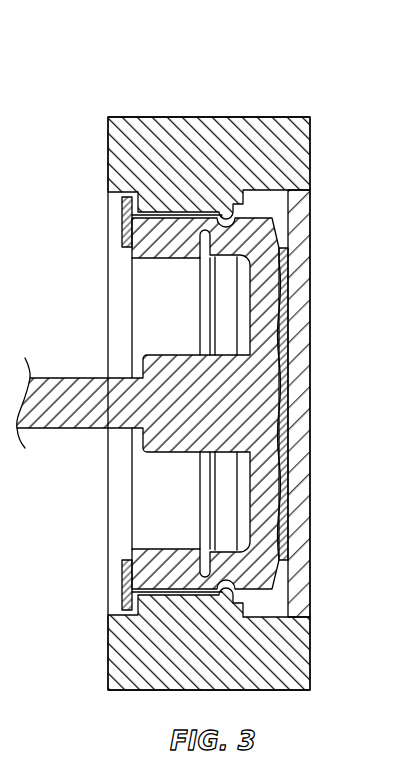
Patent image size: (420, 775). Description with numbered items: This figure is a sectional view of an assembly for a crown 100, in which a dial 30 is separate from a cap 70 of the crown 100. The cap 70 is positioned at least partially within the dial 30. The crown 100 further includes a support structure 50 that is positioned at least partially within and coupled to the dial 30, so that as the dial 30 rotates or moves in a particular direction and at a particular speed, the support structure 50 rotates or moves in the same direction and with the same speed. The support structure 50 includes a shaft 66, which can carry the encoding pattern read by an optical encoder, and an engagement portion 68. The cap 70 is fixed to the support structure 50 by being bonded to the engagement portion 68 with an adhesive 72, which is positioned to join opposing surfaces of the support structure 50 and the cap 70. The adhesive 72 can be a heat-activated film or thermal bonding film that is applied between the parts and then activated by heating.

The crown 100 is at (74, 92).
The dial 30 is at (283, 147).
The support structure 50 is at (97, 382).
The shaft 66 is at (60, 382).
The engagement portion 68 is at (221, 257).
The cap 70 is at (298, 220).
The adhesive 72 is at (290, 348).